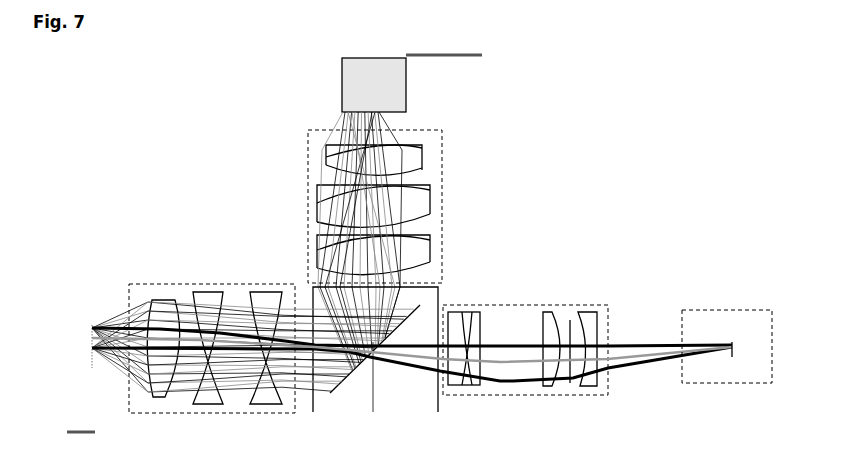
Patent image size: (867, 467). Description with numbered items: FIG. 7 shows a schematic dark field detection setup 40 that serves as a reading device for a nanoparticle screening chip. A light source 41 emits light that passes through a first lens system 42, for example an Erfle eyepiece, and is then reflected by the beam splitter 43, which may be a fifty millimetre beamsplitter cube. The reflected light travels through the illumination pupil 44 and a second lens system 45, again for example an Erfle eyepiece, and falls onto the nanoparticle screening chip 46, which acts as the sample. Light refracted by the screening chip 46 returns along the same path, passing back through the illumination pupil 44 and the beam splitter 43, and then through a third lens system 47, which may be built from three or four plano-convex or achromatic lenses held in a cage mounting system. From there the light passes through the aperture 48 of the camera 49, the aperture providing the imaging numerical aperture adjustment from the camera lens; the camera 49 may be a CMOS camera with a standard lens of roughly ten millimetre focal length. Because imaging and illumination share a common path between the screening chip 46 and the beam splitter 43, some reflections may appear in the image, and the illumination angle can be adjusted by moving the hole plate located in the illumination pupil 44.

The dark field detection setup 40 is at (494, 252).
The light source 41 is at (409, 82).
The first lens system 42 is at (313, 200).
The beam splitter 43 is at (357, 370).
The illumination pupil 44 is at (305, 392).
The second lens system 45 is at (125, 410).
The nanoparticle screening chip 46 is at (92, 318).
The third lens system 47 is at (520, 398).
The aperture 48 is at (700, 340).
The camera 49 is at (717, 388).